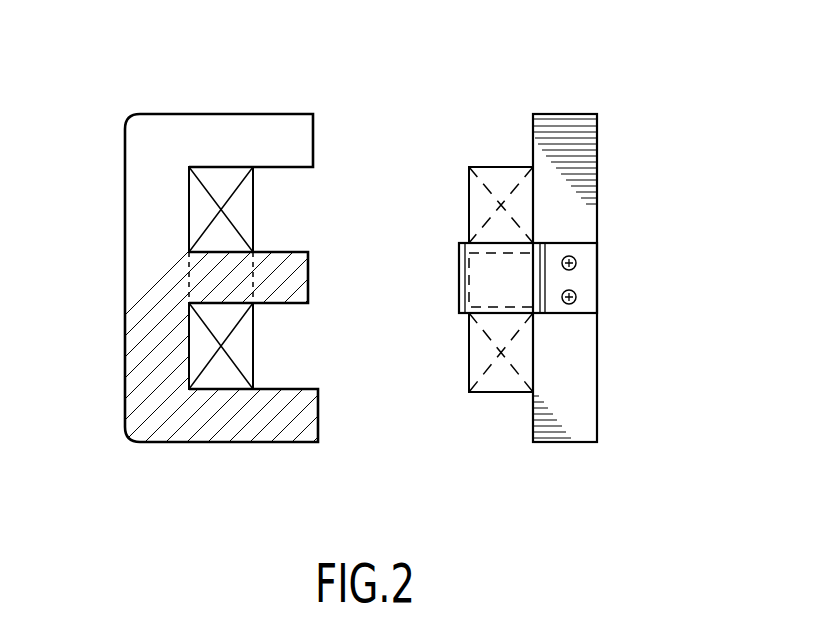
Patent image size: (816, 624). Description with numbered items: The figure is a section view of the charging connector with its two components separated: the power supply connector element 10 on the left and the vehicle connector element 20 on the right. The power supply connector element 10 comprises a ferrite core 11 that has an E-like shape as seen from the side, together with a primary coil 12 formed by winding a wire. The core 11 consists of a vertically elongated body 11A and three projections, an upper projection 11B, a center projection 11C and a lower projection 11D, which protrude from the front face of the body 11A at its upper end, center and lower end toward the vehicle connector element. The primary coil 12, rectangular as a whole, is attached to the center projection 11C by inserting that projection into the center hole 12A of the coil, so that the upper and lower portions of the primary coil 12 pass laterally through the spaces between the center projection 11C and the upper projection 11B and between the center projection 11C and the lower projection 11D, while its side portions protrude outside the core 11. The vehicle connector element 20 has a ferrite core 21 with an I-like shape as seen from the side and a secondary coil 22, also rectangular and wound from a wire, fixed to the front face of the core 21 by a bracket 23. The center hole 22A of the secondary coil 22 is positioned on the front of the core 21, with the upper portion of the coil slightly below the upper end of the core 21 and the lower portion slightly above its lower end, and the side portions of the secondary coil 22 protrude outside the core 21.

The power supply connector element 10 is at (382, 271).
The core 11 is at (382, 274).
The body 11A is at (147, 250).
The upper projection 11B is at (307, 133).
The center projection 11C is at (285, 267).
The lower projection 11D is at (278, 438).
The primary coil 12 is at (146, 218).
The center hole 12A is at (218, 303).
The vehicle connector element 20 is at (537, 225).
The core 21 is at (583, 155).
The secondary coil 22 is at (462, 229).
The center hole 22A is at (498, 303).
The bracket 23 is at (585, 280).